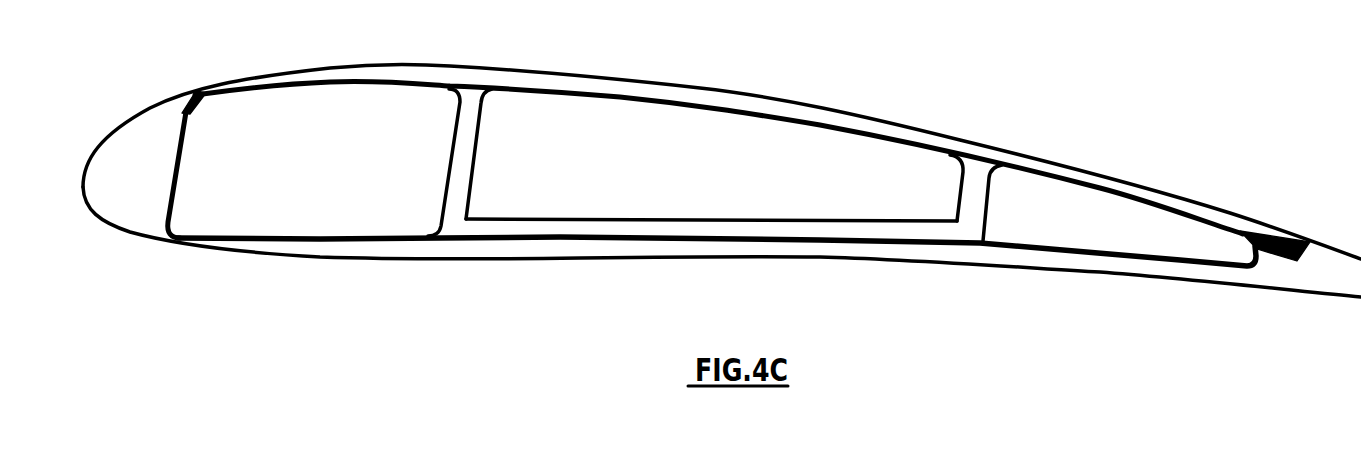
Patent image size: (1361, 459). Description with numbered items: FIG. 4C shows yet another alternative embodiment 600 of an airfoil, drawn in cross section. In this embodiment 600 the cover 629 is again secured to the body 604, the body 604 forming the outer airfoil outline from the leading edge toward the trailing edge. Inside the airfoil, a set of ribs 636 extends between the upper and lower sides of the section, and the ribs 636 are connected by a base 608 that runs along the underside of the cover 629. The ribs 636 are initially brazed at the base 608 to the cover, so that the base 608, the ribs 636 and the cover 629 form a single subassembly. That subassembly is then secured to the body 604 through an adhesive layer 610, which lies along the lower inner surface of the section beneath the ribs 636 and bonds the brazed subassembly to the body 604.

The embodiment 600 is at (711, 205).
The body 604 is at (84, 184).
The base 608 is at (478, 86).
The adhesive layer 610 is at (588, 230).
The cover 629 is at (603, 87).
The ribs 636 is at (463, 178).